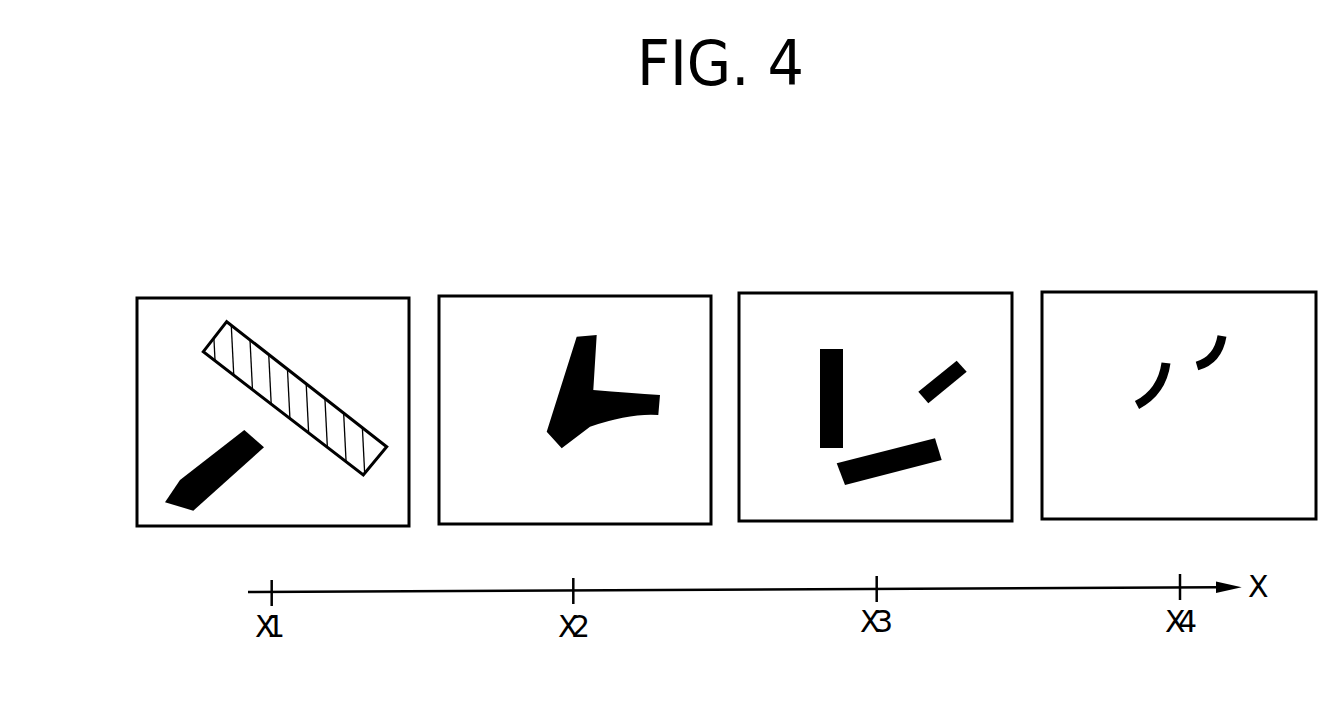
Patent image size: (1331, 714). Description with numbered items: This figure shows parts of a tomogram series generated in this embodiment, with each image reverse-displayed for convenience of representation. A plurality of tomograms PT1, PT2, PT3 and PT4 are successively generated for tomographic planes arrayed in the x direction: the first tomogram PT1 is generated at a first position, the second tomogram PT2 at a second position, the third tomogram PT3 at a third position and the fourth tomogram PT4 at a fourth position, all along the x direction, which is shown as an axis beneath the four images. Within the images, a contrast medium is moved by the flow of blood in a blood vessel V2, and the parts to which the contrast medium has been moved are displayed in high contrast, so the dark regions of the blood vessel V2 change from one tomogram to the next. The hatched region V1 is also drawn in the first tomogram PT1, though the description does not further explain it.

The first tomogram PT1 is at (295, 273).
The second tomogram PT2 is at (591, 270).
The third tomogram PT3 is at (891, 268).
The fourth tomogram PT4 is at (1201, 266).
The first region (hatched) V1 is at (377, 462).
The blood vessel V2 is at (240, 475).